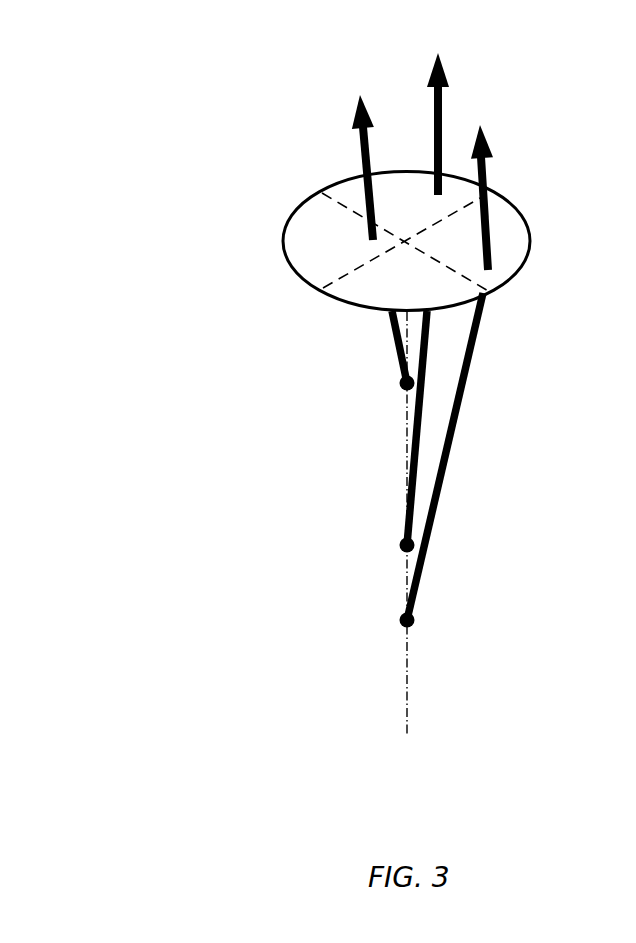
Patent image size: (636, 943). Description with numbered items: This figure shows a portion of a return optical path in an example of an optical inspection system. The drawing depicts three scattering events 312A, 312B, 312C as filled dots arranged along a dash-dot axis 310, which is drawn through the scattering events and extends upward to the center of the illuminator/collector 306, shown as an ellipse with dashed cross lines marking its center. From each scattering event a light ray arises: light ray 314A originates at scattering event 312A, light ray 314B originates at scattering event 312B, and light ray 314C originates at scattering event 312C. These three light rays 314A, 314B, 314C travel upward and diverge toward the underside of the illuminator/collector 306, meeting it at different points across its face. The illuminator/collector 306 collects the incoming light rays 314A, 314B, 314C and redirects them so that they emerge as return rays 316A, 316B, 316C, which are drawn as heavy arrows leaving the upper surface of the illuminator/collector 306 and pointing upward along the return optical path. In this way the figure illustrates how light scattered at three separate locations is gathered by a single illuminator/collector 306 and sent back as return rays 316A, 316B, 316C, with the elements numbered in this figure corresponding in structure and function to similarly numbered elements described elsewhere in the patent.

The illuminator/collector 306 is at (531, 241).
The central axis 310 is at (407, 692).
The scattering event 312A is at (400, 384).
The scattering event 312B is at (401, 545).
The scattering event 312C is at (401, 620).
The light ray 314A is at (395, 342).
The light ray 314B is at (413, 429).
The light ray 314C is at (442, 494).
The return ray 316A is at (358, 141).
The return ray 316B is at (447, 69).
The return ray 316C is at (488, 156).